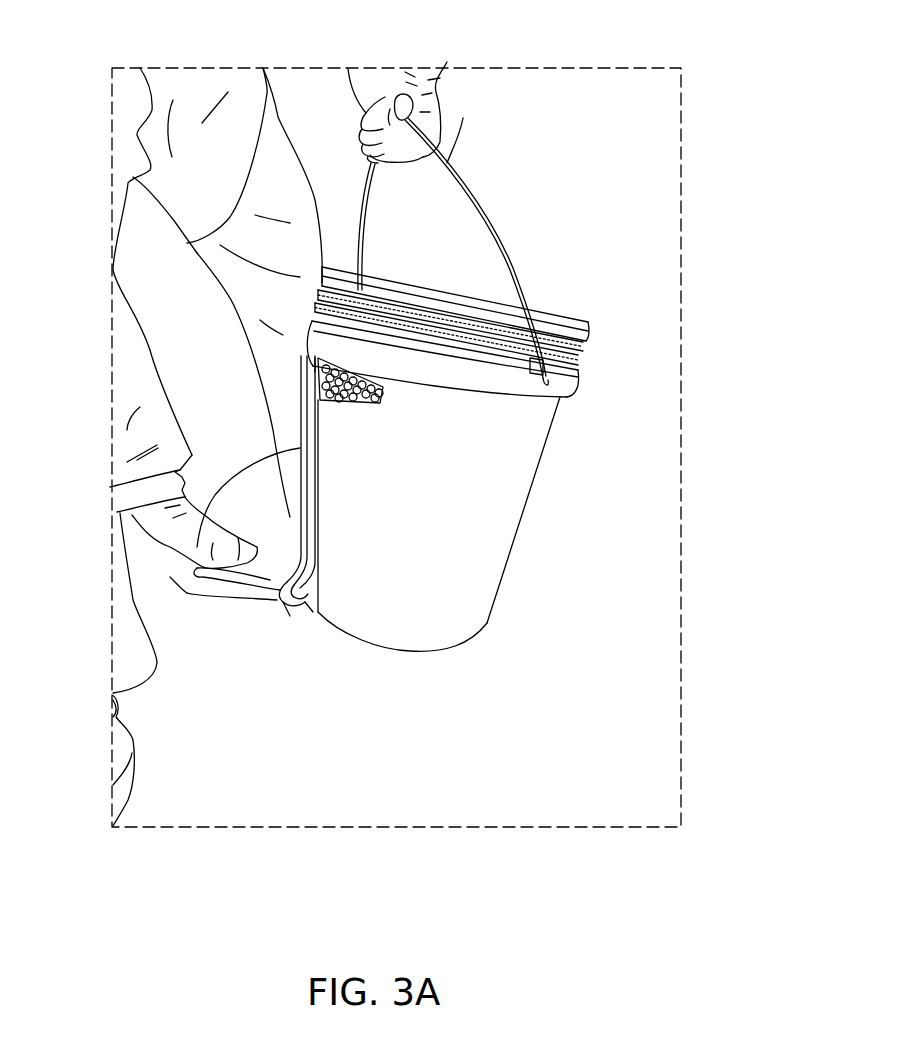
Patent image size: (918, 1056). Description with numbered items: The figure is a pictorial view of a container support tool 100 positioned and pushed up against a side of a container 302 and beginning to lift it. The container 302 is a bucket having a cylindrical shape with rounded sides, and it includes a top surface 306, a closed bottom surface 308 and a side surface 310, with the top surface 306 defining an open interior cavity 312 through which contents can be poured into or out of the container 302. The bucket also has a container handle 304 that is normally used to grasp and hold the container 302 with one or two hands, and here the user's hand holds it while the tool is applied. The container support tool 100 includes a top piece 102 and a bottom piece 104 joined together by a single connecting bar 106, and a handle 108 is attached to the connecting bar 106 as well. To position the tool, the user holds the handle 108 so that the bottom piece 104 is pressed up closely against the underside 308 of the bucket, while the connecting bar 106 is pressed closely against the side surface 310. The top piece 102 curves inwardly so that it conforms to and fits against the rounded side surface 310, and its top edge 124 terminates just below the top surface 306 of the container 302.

The container support tool 100 is at (291, 413).
The top piece 102 is at (318, 358).
The bottom piece 104 is at (287, 600).
The connecting bar 106 is at (205, 550).
The handle 108 is at (200, 567).
The top edge 124 is at (383, 393).
The container 302 is at (540, 397).
The container handle 304 is at (464, 117).
The top surface 306 is at (585, 321).
The bottom surface 308 is at (300, 608).
The side surface 310 is at (210, 287).
The interior cavity 312 is at (400, 281).